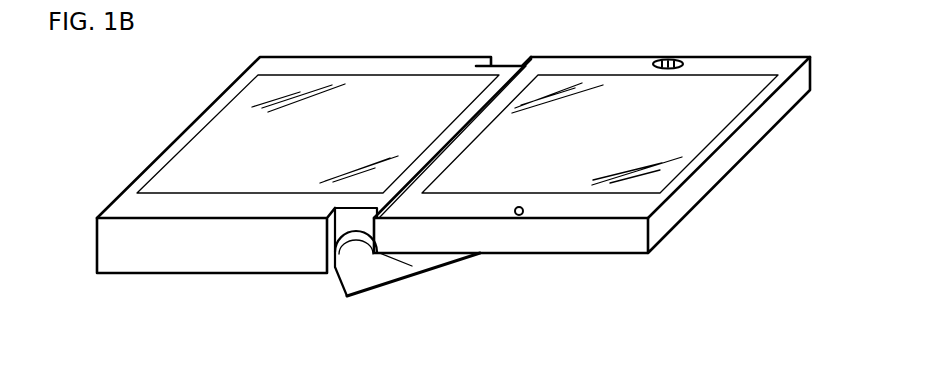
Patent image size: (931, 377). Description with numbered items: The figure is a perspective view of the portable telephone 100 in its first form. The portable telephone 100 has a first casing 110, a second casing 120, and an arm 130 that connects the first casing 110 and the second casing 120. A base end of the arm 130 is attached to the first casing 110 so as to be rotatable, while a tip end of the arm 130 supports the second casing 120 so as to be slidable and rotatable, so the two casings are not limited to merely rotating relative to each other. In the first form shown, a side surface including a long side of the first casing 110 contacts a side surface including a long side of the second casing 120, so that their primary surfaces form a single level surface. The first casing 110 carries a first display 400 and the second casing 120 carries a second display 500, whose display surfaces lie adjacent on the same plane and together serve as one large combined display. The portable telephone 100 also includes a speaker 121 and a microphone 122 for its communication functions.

The portable telephone 100 is at (757, 47).
The first casing 110 is at (177, 254).
The second casing 120 is at (633, 238).
The speaker 121 is at (668, 58).
The microphone 122 is at (512, 209).
The arm 130 is at (373, 283).
The first display 400 is at (259, 114).
The second display 500 is at (657, 142).